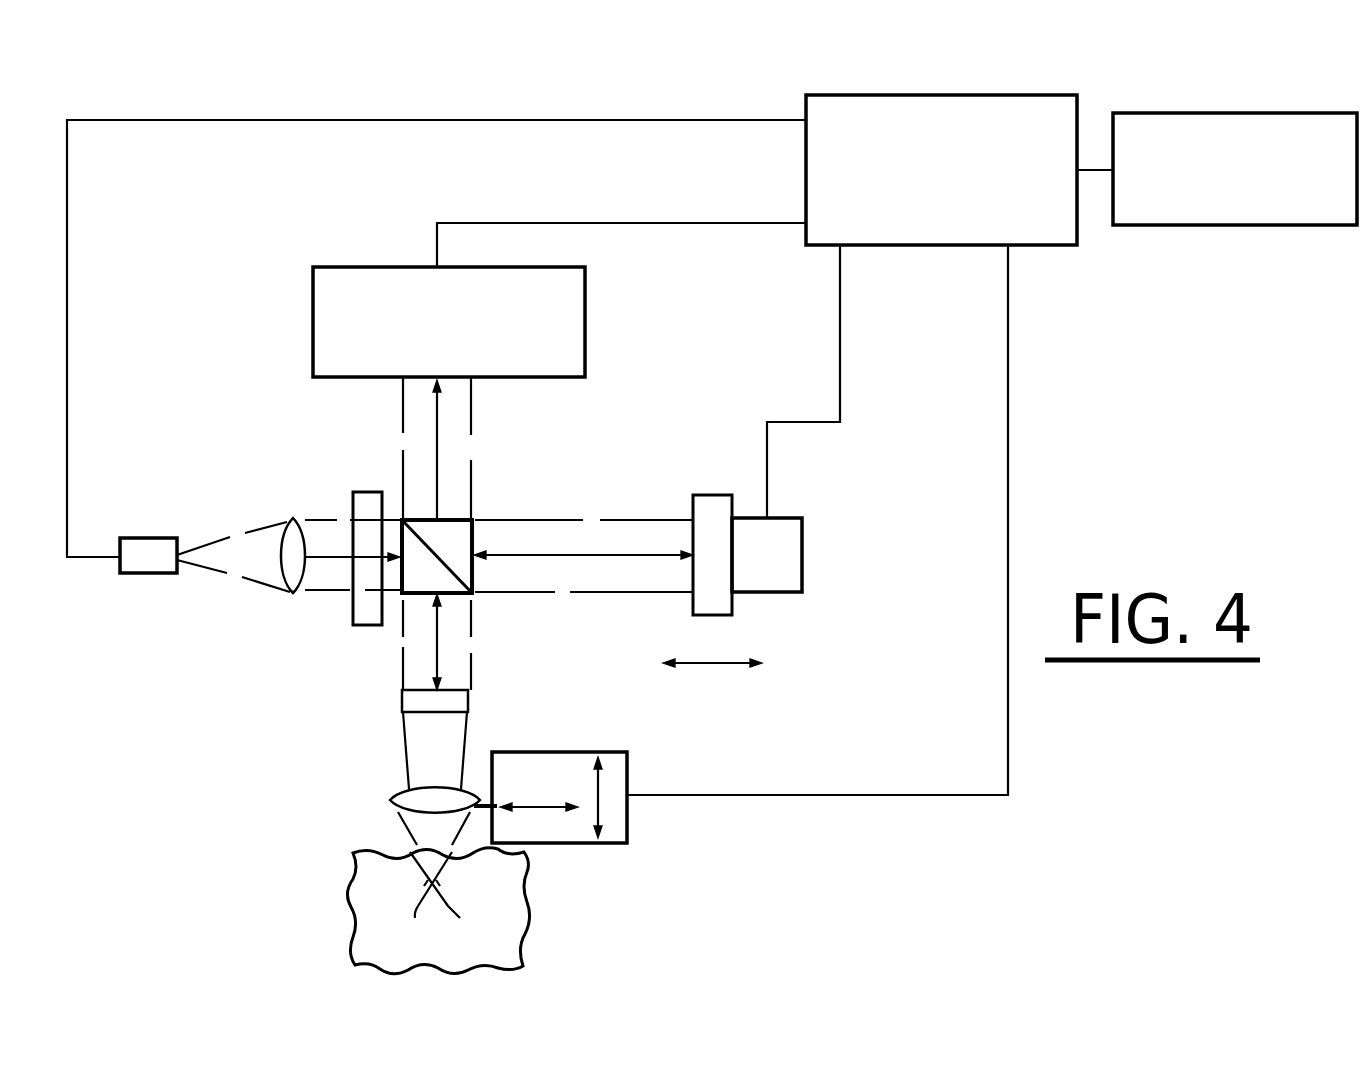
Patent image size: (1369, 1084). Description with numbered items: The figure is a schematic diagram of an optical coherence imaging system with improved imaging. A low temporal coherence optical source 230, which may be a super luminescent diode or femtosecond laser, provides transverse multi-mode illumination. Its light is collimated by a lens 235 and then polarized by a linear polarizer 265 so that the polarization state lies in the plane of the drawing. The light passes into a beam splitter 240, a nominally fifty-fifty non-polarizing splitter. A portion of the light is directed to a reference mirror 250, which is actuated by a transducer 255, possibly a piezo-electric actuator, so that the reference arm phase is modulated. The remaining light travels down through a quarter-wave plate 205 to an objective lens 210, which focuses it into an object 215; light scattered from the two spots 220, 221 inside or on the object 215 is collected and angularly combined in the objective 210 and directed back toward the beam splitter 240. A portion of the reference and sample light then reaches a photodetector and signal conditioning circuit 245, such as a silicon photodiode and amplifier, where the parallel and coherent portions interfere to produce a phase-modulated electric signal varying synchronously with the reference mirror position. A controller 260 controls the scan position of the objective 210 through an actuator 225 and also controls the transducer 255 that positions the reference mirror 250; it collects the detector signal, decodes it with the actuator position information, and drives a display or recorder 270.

The quarter-wave plate 205 is at (469, 700).
The objective lens 210 is at (397, 803).
The object 215 is at (352, 909).
The spot 220 is at (460, 916).
The spot 221 is at (398, 912).
The actuator 225 is at (627, 838).
The low temporal coherence optical source 230 is at (143, 537).
The lens 235 is at (293, 518).
The beam splitter 240 is at (455, 517).
The photodetector and signal conditioning circuit 245 is at (585, 312).
The reference mirror 250 is at (708, 495).
The transducer 255 is at (802, 555).
The controller 260 is at (933, 245).
The linear polarizer 265 is at (368, 492).
The display or recorder 270 is at (1207, 225).